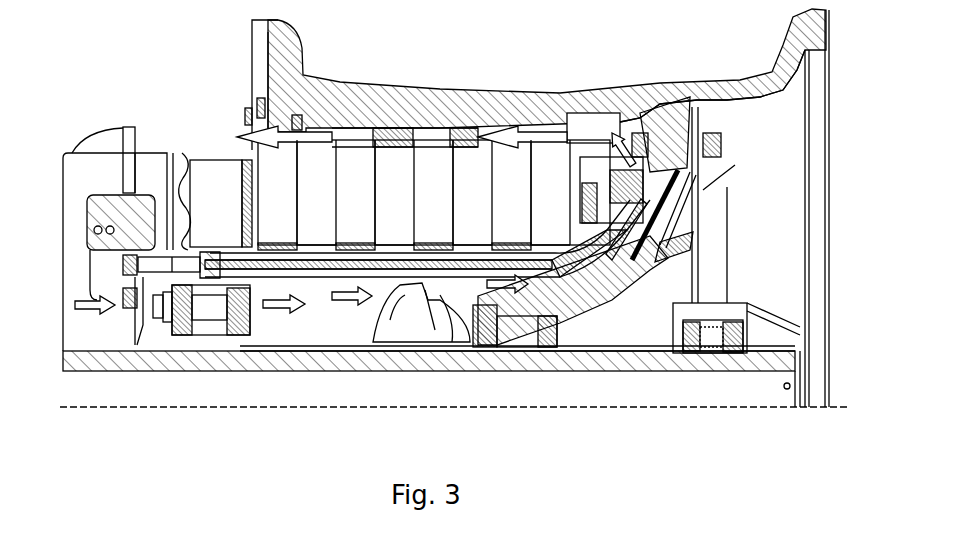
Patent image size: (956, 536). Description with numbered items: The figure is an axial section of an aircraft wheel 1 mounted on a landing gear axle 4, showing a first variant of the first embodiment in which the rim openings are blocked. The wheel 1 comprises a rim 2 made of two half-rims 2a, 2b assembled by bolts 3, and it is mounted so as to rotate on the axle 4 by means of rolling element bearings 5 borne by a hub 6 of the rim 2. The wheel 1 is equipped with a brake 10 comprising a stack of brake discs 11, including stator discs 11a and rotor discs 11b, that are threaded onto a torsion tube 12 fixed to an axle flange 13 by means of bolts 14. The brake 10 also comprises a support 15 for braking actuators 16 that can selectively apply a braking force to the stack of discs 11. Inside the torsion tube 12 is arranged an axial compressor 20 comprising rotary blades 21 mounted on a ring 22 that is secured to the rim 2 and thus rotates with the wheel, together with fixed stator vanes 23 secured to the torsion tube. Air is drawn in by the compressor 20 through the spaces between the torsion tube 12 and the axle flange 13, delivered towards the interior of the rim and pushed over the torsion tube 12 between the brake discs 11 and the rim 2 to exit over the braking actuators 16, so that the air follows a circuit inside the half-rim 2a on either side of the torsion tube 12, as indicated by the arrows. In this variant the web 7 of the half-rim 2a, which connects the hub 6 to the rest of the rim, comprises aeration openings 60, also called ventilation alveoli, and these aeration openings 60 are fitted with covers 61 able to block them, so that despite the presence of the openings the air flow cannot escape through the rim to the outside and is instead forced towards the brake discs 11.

The aircraft wheel 1 is at (168, 52).
The rim 2 is at (382, 65).
The half-rim 2a is at (282, 54).
The half-rim 2b is at (705, 87).
The bolts 3 is at (728, 147).
The axle 4 is at (757, 365).
The rolling element bearings 5 is at (557, 338).
The hub 6 is at (604, 298).
The web 7 is at (641, 270).
The brake 10 is at (114, 106).
The brake discs 11 is at (256, 149).
The stator discs 11a is at (292, 199).
The rotor discs 11b is at (331, 199).
The torsion tube 12 is at (326, 301).
The axle flange 13 is at (212, 346).
The bolts 14 is at (180, 336).
The support 15 is at (74, 152).
The braking actuators 16 is at (210, 162).
The axial compressor 20 is at (366, 330).
The rotary blades 21 is at (418, 300).
The ring 22 is at (374, 340).
The stator vanes 23 is at (455, 312).
The aeration openings 60 is at (650, 240).
The covers 61 is at (668, 197).